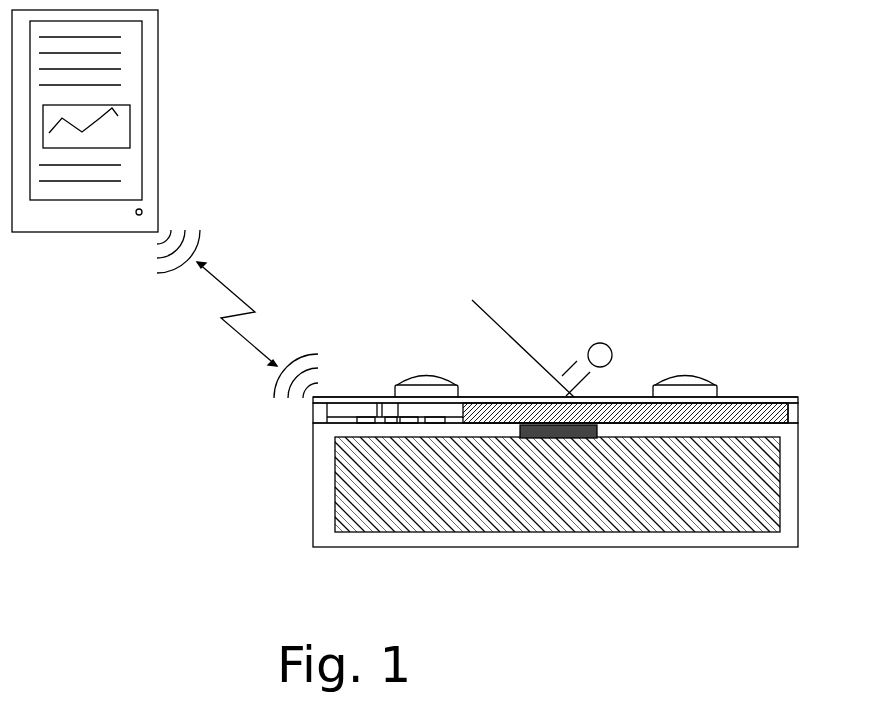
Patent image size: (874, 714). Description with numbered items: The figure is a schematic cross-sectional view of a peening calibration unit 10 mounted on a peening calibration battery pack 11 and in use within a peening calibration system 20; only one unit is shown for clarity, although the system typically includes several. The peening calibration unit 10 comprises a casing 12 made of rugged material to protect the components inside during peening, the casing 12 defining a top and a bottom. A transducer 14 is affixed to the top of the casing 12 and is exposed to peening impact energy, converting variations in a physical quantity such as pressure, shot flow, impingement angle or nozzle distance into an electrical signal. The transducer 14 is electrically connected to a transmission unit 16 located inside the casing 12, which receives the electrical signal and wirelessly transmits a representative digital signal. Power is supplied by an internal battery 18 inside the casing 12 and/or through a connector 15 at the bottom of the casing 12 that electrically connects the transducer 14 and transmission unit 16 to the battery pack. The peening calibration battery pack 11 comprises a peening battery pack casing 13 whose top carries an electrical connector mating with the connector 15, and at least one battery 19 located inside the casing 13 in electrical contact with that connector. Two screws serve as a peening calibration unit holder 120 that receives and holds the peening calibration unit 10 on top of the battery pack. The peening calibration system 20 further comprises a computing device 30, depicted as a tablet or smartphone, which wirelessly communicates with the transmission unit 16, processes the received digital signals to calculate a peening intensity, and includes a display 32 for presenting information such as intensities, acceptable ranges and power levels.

The peening calibration unit 10 is at (549, 445).
The peening calibration battery pack 11 is at (737, 558).
The casing 12 is at (313, 417).
The peening battery pack casing 13 is at (318, 512).
The transducer 14 is at (503, 405).
The connector 15 is at (600, 425).
The transmission unit 16 is at (363, 417).
The internal battery 18 is at (757, 412).
The battery 19 is at (372, 490).
The peening calibration system 20 is at (552, 123).
The computing device 30 is at (151, 138).
The display 32 is at (93, 102).
The peening calibration unit holder 120 is at (440, 373).